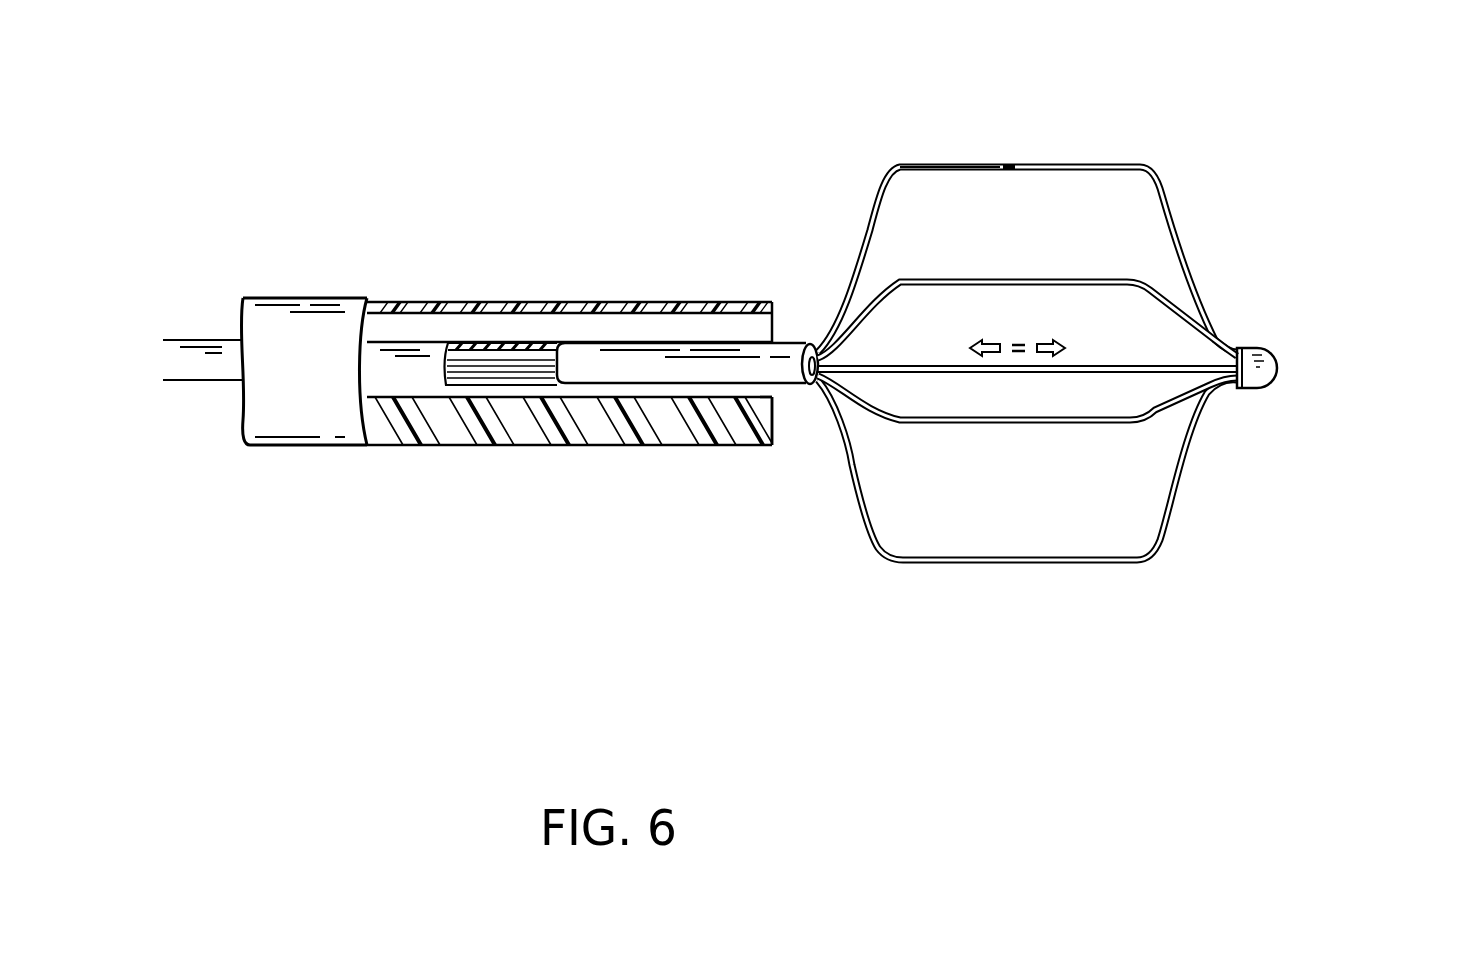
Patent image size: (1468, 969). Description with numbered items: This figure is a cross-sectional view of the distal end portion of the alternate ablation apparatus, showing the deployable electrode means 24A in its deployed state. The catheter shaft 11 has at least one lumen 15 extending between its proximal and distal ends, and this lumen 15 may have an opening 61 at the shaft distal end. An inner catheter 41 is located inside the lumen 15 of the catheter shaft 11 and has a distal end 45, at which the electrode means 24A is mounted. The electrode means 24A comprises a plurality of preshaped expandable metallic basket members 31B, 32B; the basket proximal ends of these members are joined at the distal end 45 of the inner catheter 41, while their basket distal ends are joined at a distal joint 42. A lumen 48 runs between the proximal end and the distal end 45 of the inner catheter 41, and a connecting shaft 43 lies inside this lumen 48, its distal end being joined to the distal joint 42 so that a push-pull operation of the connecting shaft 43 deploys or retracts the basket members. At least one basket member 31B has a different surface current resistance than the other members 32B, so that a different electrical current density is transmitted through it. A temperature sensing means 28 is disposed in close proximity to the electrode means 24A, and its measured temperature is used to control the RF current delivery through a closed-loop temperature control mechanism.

The catheter shaft 11 is at (330, 300).
The lumen 15 is at (402, 327).
The inner catheter 41 is at (587, 342).
The lumen 48 is at (467, 358).
The connecting shaft 43 is at (503, 367).
The opening 61 is at (781, 393).
The distal end 45 is at (812, 393).
The electrode means 24A is at (933, 165).
The temperature sensing means 28 is at (1012, 160).
The preshaped expandable metallic basket member 31B is at (1177, 227).
The preshaped expandable metallic basket members 32B is at (1153, 292).
The distal joint 42 is at (1273, 345).